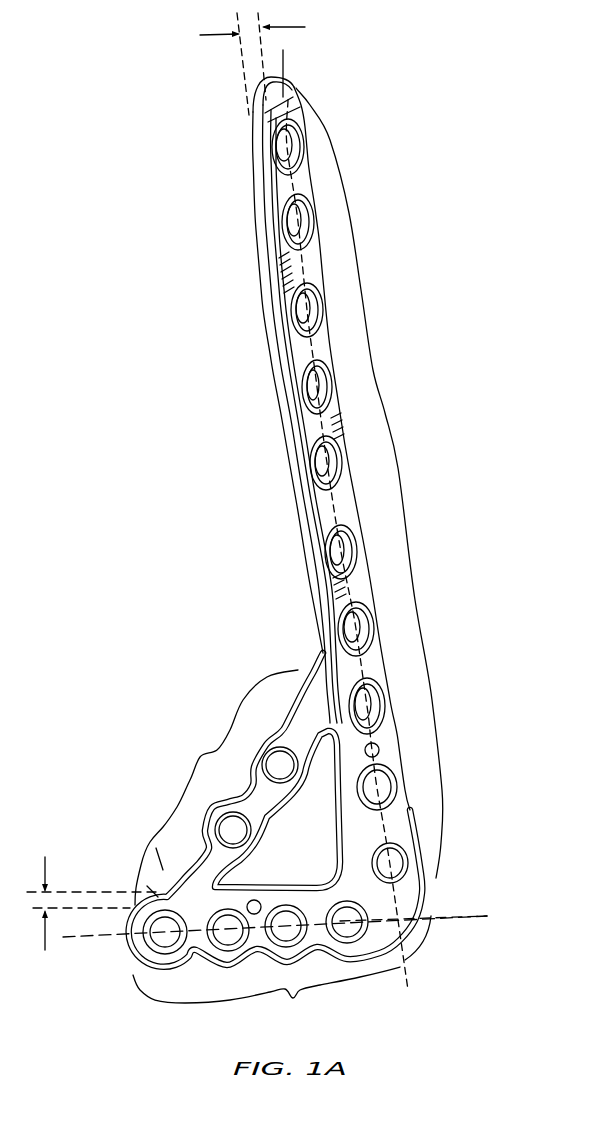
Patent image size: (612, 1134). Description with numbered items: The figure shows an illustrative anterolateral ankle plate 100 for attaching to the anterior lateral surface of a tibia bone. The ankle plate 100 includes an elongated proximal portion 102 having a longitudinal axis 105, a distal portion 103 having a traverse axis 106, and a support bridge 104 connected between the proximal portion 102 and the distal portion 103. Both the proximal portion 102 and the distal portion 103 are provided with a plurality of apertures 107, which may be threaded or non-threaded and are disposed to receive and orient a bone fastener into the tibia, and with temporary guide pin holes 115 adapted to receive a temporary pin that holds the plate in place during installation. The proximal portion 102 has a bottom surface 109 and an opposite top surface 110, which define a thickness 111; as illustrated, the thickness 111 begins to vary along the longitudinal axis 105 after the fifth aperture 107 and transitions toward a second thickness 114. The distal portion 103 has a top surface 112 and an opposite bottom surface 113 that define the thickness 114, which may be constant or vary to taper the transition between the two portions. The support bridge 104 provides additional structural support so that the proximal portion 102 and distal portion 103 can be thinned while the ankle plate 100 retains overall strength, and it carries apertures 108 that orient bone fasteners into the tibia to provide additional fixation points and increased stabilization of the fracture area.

The ankle plate 100 is at (470, 72).
The proximal portion 102 is at (402, 470).
The distal portion 103 is at (276, 837).
The support bridge 104 is at (205, 757).
The longitudinal axis 105 is at (404, 975).
The traverse axis 106 is at (452, 917).
The apertures 107 is at (280, 173).
The apertures 108 is at (299, 818).
The bottom surface 109 is at (253, 124).
The top surface 110 is at (280, 145).
The thickness 111 is at (274, 64).
The top surface 112 is at (163, 867).
The bottom surface 113 is at (147, 890).
The thickness 114 is at (93, 914).
The temporary guide pin holes 115 is at (379, 749).